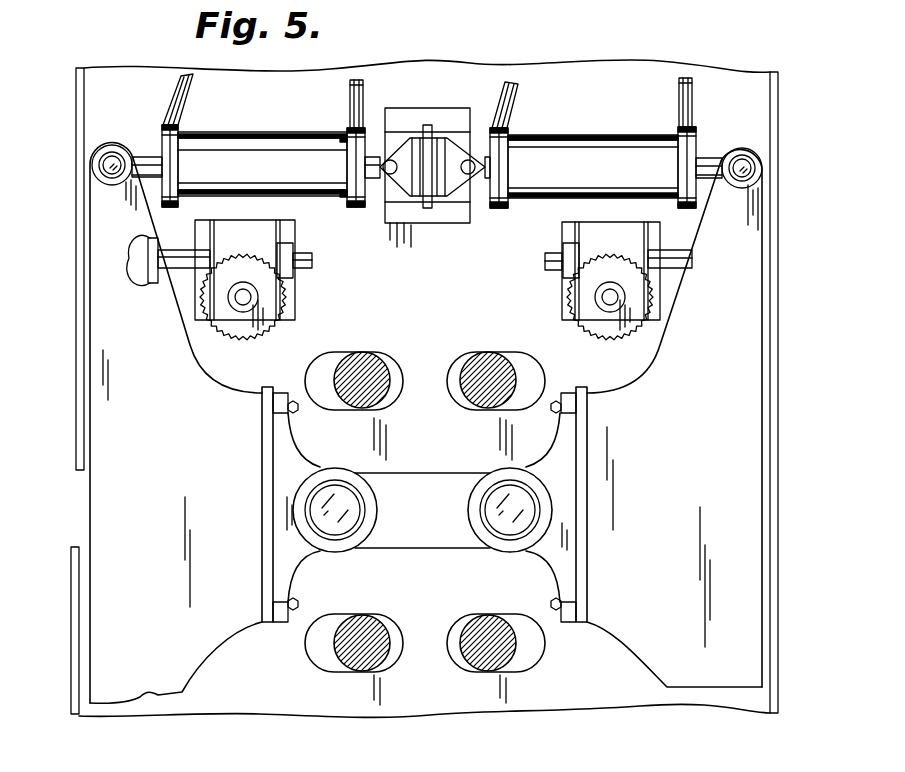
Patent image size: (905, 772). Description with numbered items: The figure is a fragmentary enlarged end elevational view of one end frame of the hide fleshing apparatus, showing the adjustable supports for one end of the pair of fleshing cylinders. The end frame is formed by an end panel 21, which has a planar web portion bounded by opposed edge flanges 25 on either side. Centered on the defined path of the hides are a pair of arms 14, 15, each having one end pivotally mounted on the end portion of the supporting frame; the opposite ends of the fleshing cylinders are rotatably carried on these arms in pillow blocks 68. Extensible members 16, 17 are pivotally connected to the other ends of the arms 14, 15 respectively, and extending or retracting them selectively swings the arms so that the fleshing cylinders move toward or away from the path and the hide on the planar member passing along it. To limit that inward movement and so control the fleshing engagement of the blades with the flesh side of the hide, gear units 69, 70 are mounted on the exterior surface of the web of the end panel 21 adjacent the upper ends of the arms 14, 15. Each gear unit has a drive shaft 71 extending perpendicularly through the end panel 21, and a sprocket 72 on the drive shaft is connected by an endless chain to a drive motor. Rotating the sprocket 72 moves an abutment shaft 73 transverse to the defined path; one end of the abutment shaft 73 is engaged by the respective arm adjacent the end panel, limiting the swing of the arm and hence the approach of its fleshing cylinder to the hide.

The arm 14 is at (748, 323).
The arm 15 is at (100, 272).
The extensible member 16 is at (562, 152).
The extensible member 17 is at (272, 152).
The end panel 21 is at (74, 172).
The edge flange 25 is at (782, 184).
The pillow block 68 is at (347, 462).
The gear unit 69 is at (562, 302).
The gear unit 70 is at (295, 308).
The drive shaft 71 is at (246, 300).
The sprocket 72 is at (228, 324).
The abutment shaft 73 is at (182, 270).